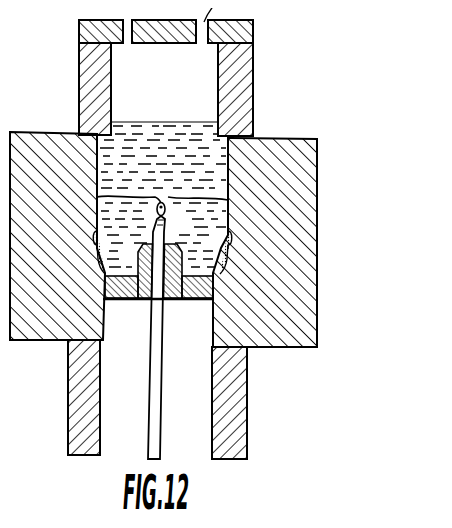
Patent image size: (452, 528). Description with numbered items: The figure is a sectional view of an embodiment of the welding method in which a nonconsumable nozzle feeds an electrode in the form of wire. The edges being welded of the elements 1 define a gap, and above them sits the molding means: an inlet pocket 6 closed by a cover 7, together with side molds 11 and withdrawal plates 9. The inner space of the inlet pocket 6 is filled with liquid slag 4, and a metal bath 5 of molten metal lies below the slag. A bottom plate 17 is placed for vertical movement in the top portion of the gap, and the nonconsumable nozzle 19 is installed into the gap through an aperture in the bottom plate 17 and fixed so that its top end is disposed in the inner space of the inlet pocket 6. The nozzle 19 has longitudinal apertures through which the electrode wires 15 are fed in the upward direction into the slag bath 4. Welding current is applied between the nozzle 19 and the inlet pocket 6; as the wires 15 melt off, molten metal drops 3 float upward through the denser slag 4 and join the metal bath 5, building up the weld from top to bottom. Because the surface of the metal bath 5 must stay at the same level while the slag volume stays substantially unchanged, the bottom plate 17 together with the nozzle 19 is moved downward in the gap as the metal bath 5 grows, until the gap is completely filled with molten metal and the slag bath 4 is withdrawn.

The elements being welded 1 is at (292, 162).
The molten metal drops 3 is at (153, 192).
The slag 4 is at (175, 207).
The metal bath 5 is at (152, 133).
The inlet pocket 6 is at (242, 54).
The cover 7 is at (244, 23).
The withdrawal plates 9 is at (237, 401).
The side molds 11 is at (118, 56).
The electrode wires 15 is at (143, 373).
The bottom plate 17 is at (192, 280).
The nonconsumable nozzle 19 is at (140, 280).